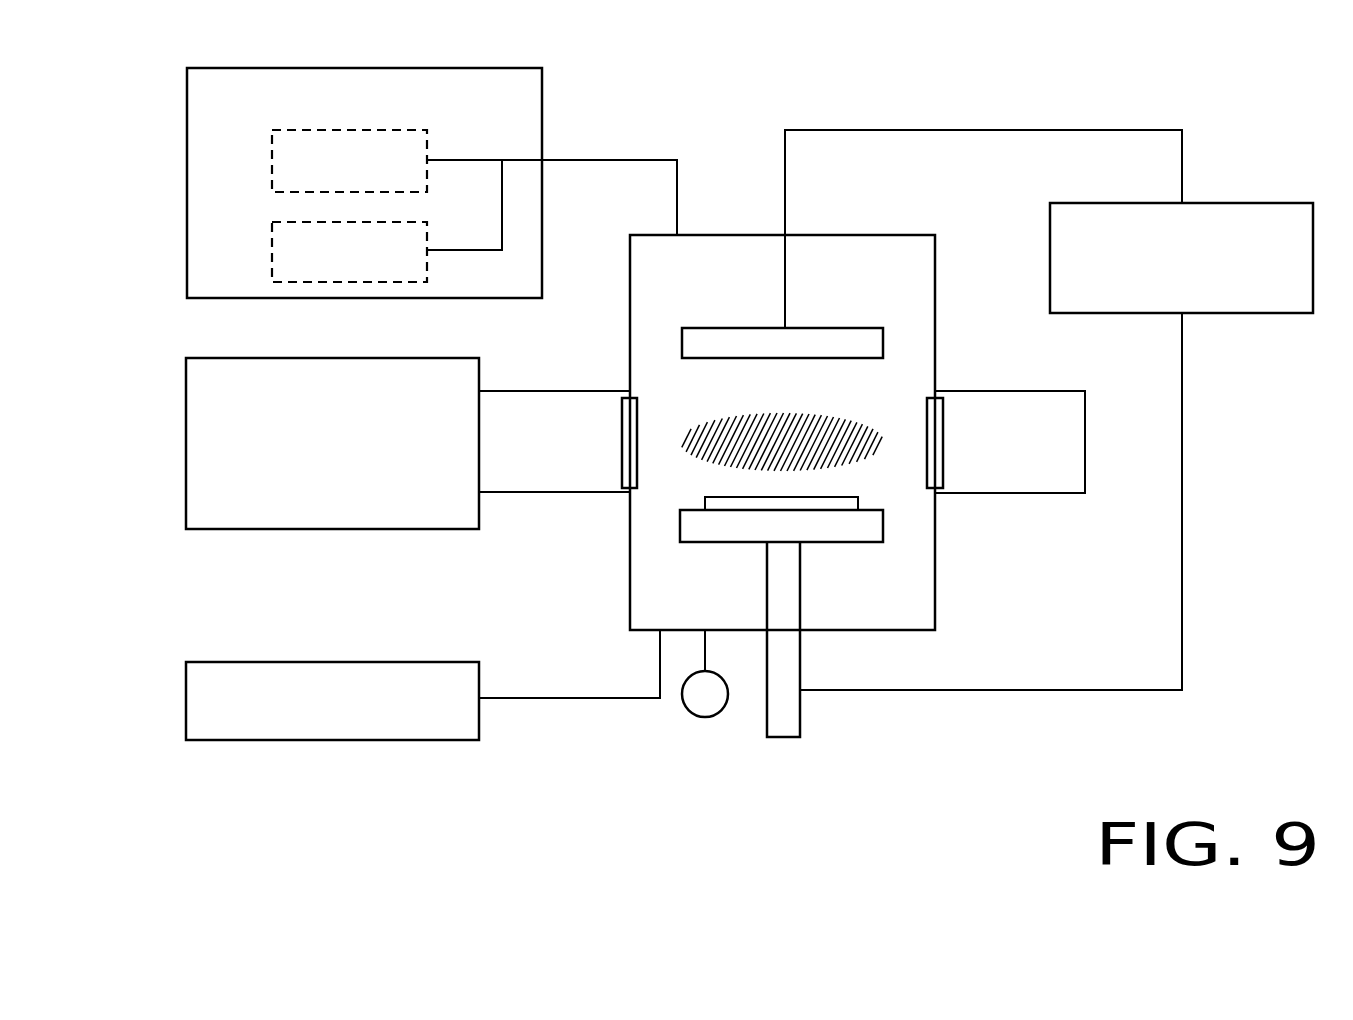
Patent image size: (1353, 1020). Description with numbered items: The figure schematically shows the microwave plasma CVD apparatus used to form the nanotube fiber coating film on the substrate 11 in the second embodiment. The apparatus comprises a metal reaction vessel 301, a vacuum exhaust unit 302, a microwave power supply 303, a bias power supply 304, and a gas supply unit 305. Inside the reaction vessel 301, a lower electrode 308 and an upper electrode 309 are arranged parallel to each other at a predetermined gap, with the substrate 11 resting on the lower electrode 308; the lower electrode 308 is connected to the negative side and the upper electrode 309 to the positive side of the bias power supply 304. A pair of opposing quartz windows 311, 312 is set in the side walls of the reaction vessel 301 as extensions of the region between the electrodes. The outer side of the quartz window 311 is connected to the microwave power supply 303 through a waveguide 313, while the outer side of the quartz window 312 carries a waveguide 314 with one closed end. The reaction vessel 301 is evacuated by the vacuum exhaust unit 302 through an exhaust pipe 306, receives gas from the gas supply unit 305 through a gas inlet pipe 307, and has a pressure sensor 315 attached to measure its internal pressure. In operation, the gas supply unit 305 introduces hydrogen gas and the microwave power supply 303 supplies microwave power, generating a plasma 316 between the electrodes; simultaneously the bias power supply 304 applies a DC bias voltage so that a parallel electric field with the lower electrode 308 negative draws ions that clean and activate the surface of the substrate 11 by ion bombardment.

The substrate 11 is at (702, 503).
The reaction vessel 301 is at (893, 235).
The vacuum exhaust unit 302 is at (300, 662).
The microwave power supply 303 is at (407, 529).
The bias power supply 304 is at (1240, 203).
The gas supply unit 305 is at (542, 93).
The exhaust pipe 306 is at (563, 698).
The gas inlet pipe 307 is at (645, 160).
The lower electrode 308 is at (680, 525).
The upper electrode 309 is at (833, 328).
The quartz window 311 is at (621, 412).
The quartz window 312 is at (945, 420).
The waveguide 313 is at (535, 391).
The waveguide with one closed end 314 is at (1055, 391).
The pressure sensor 315 is at (683, 702).
The plasma 316 is at (870, 455).